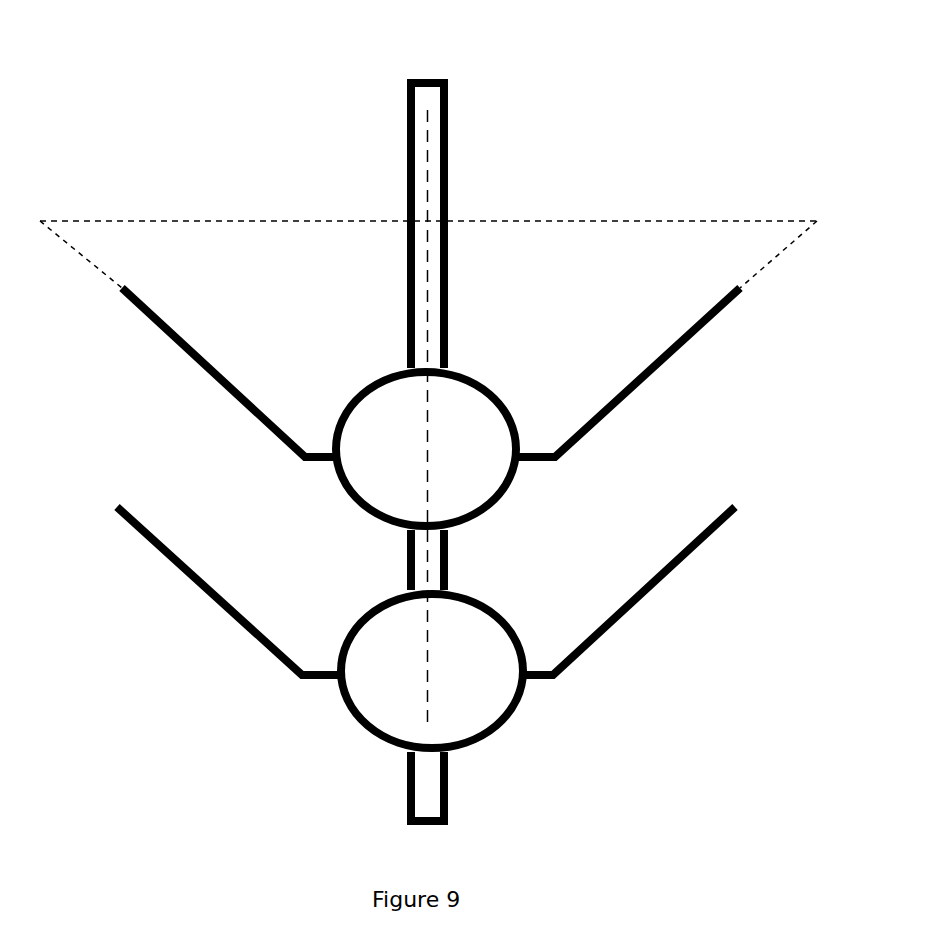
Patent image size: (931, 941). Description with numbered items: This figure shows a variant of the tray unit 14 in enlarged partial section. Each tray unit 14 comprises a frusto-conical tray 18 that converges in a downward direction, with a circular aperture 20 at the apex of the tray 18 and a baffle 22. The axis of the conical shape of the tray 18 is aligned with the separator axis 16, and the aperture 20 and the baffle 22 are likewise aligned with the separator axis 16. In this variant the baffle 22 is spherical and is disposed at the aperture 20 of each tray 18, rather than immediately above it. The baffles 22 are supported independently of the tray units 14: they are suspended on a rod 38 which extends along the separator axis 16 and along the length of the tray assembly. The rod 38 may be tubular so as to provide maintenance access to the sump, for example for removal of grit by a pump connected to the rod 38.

The tray unit 14 is at (176, 166).
The separator axis 16 is at (428, 166).
The tray 18 is at (198, 364).
The aperture 20 is at (533, 458).
The baffle 22 is at (332, 427).
The rod 38 is at (447, 88).